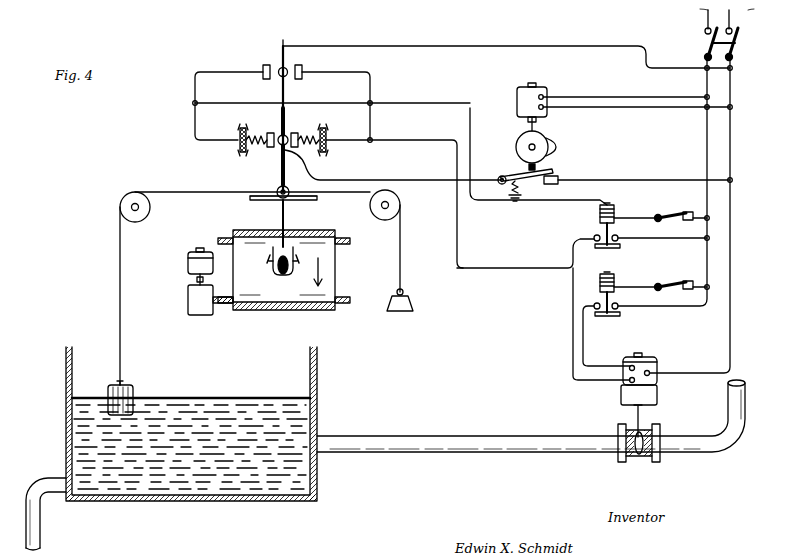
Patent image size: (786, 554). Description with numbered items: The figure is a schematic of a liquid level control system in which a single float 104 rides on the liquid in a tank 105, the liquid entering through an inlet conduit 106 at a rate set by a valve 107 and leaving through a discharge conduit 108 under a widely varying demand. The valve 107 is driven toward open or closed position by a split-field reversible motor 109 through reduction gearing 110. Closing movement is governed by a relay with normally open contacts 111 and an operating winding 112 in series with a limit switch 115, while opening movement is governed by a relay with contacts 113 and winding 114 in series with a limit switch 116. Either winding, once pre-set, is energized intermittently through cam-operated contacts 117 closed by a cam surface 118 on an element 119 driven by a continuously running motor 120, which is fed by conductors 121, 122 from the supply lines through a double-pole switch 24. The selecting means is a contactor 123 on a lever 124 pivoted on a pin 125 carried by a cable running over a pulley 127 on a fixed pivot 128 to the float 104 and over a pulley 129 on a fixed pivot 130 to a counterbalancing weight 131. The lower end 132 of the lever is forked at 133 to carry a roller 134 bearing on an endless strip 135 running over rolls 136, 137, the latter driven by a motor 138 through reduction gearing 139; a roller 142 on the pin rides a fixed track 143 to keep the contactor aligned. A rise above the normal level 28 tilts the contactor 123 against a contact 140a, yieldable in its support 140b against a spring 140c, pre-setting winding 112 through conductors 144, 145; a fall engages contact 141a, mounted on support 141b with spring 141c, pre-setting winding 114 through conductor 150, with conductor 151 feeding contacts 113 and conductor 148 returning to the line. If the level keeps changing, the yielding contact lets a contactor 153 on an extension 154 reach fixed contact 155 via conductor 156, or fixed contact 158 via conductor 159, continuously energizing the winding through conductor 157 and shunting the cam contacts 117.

The double-pole switch 24 is at (702, 42).
The normal level 28 is at (224, 398).
The float 104 is at (133, 394).
The tank 105 is at (317, 368).
The inlet conduit 106 is at (391, 436).
The valve 107 is at (643, 462).
The discharge conduit 108 is at (40, 530).
The split-field reversible motor 109 is at (656, 364).
The reduction gearing 110 is at (621, 396).
The normally open contacts 111 is at (620, 315).
The operating winding 112 is at (614, 276).
The normally open contacts 113 is at (594, 238).
The operating winding 114 is at (614, 206).
The limit switch 115 is at (672, 283).
The limit switch 116 is at (672, 214).
The normally open contacts 117 is at (562, 176).
The cam surface 118 is at (556, 147).
The cam element 119 is at (518, 141).
The electric motor 120 is at (517, 96).
The conductor 121 is at (602, 96).
The conductor 122 is at (598, 107).
The contactor 123 is at (280, 146).
The lever 124 is at (270, 180).
The pin 125 is at (278, 200).
The pulley 127 is at (126, 196).
The fixed pivot 128 is at (131, 207).
The pulley 129 is at (396, 199).
The fixed pivot 130 is at (390, 206).
The weight 131 is at (413, 304).
The lower end of lever 132 is at (290, 222).
The fork 133 is at (293, 252).
The roller 134 is at (281, 276).
The endless strip 135 is at (335, 270).
The roll 136 is at (345, 240).
The roll 137 is at (341, 304).
The electric motor 138 is at (188, 264).
The reduction gearing 139 is at (188, 298).
The contact 140a is at (298, 133).
The support 140b is at (326, 131).
The coiled compression spring 140c is at (325, 152).
The contact 141a is at (268, 134).
The support 141b is at (240, 131).
The spring 141c is at (242, 152).
The roller 142 is at (286, 202).
The fixed track 143 is at (248, 198).
The conductor 144 is at (706, 140).
The conductor 145 is at (470, 268).
The conductor 148 is at (730, 136).
The conductor 150 is at (478, 200).
The conductor 151 is at (672, 238).
The contactor 153 is at (284, 47).
The extension 154 is at (285, 85).
The fixed contact 155 is at (300, 69).
The conductor 156 is at (370, 123).
The conductor 157 is at (430, 46).
The fixed contact 158 is at (262, 69).
The conductor 159 is at (195, 94).